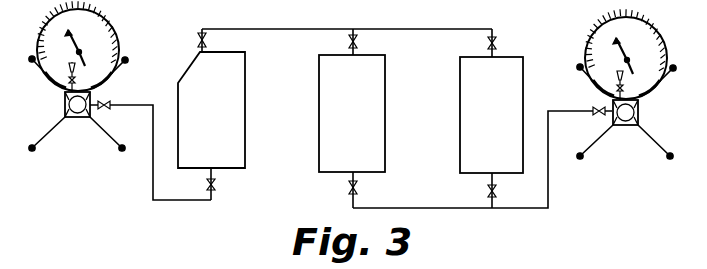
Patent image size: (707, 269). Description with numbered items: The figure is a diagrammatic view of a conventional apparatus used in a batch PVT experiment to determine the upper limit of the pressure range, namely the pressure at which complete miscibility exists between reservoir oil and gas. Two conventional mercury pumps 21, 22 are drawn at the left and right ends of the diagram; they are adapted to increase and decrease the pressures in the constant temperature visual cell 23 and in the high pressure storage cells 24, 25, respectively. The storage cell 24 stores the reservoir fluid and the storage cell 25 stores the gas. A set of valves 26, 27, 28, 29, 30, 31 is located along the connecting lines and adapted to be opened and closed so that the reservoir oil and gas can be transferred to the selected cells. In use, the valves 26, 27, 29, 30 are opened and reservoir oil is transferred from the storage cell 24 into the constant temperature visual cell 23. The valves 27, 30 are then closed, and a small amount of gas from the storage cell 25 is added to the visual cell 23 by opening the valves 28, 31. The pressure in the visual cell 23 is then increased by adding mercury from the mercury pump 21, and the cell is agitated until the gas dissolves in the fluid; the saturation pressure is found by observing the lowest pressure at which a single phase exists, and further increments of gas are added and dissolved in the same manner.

The mercury pump 21 is at (65, 105).
The mercury pump 22 is at (639, 112).
The constant temperature visual cell 23 is at (211, 110).
The high pressure storage cell 24 is at (352, 113).
The high pressure storage cell 25 is at (491, 115).
The valve 26 is at (199, 36).
The valve 27 is at (360, 36).
The valve 28 is at (498, 42).
The valve 29 is at (216, 183).
The valve 30 is at (347, 190).
The valve 31 is at (488, 193).